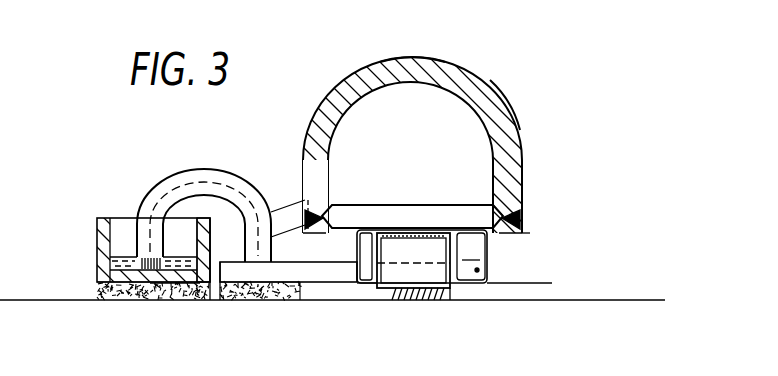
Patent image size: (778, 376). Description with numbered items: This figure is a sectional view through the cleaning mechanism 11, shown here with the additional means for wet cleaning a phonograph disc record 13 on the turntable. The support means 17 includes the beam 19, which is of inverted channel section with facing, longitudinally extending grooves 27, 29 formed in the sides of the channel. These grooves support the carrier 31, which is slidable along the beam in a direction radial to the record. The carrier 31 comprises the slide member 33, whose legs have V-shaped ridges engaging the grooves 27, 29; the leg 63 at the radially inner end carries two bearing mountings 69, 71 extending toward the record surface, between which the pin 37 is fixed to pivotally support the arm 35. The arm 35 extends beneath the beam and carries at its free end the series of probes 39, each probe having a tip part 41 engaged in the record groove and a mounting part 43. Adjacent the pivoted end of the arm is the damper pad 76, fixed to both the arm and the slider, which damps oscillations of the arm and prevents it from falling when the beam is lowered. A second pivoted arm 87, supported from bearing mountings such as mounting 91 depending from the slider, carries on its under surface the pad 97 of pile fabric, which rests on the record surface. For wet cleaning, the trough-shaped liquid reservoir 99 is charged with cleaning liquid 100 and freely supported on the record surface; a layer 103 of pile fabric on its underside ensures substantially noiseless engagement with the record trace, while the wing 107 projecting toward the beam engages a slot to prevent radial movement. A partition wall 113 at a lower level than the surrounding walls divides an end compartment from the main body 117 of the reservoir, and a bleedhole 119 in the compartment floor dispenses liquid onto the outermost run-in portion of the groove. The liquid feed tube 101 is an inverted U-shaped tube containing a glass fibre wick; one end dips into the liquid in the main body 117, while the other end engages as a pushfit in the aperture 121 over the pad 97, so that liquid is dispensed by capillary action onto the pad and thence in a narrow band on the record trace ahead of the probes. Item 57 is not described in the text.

The cleaning mechanism 11 is at (537, 178).
The phonograph disc record 13 is at (622, 300).
The support means 17 is at (470, 56).
The beam 19 is at (403, 57).
The groove 27 is at (332, 194).
The groove 29 is at (522, 235).
The carrier 31 is at (552, 281).
The slide member 33 is at (405, 215).
The arm 35 is at (450, 300).
The pin 37 is at (358, 240).
The probes 39 is at (438, 298).
The tip part 41 is at (405, 292).
The mounting part 43 is at (414, 296).
The housing wall 57 is at (520, 98).
The leg 63 is at (450, 205).
The bearing mounting 69 is at (362, 288).
The bearing mounting 71 is at (470, 282).
The damper pad 76 is at (398, 240).
The second pivoted arm 87 is at (324, 300).
The bearing mounting 91 is at (487, 258).
The pad 97 is at (230, 300).
The liquid reservoir 99 is at (120, 247).
The cleaning liquid 100 is at (100, 266).
The liquid feed tube 101 is at (200, 168).
The layer of pile fabric 103 is at (108, 300).
The wing 107 is at (284, 212).
The partition wall 113 is at (118, 218).
The main body 117 is at (97, 243).
The bleedhole 119 is at (168, 300).
The aperture 121 is at (262, 300).